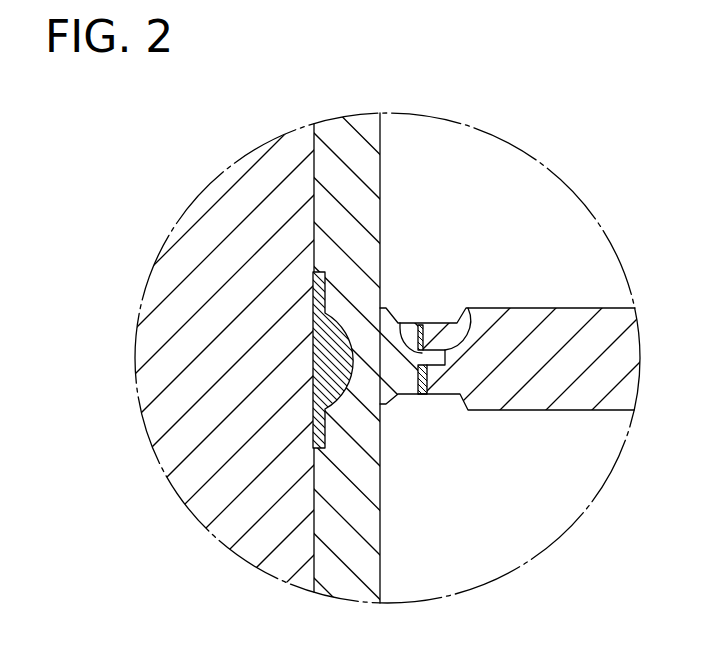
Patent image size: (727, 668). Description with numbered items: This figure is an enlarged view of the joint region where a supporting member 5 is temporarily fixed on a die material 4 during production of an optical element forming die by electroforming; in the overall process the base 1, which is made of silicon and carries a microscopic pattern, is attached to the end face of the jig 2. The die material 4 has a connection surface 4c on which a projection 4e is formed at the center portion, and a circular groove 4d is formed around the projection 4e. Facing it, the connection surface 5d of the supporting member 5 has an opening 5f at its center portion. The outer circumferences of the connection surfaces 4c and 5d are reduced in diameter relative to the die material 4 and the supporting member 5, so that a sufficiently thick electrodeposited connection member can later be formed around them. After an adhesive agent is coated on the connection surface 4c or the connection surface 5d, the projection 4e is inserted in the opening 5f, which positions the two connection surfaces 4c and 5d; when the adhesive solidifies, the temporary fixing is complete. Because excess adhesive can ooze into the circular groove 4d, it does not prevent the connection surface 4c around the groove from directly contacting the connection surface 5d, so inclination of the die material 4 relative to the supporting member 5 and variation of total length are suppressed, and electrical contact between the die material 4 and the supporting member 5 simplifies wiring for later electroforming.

The base 1 is at (323, 338).
The jig 2 is at (160, 415).
The die material 4 is at (360, 190).
The supporting member 5 is at (570, 309).
The connection surface 4c is at (427, 325).
The groove 4d is at (470, 322).
The projection 4e is at (432, 391).
The connection surface 5d is at (417, 394).
The opening 5f is at (400, 326).